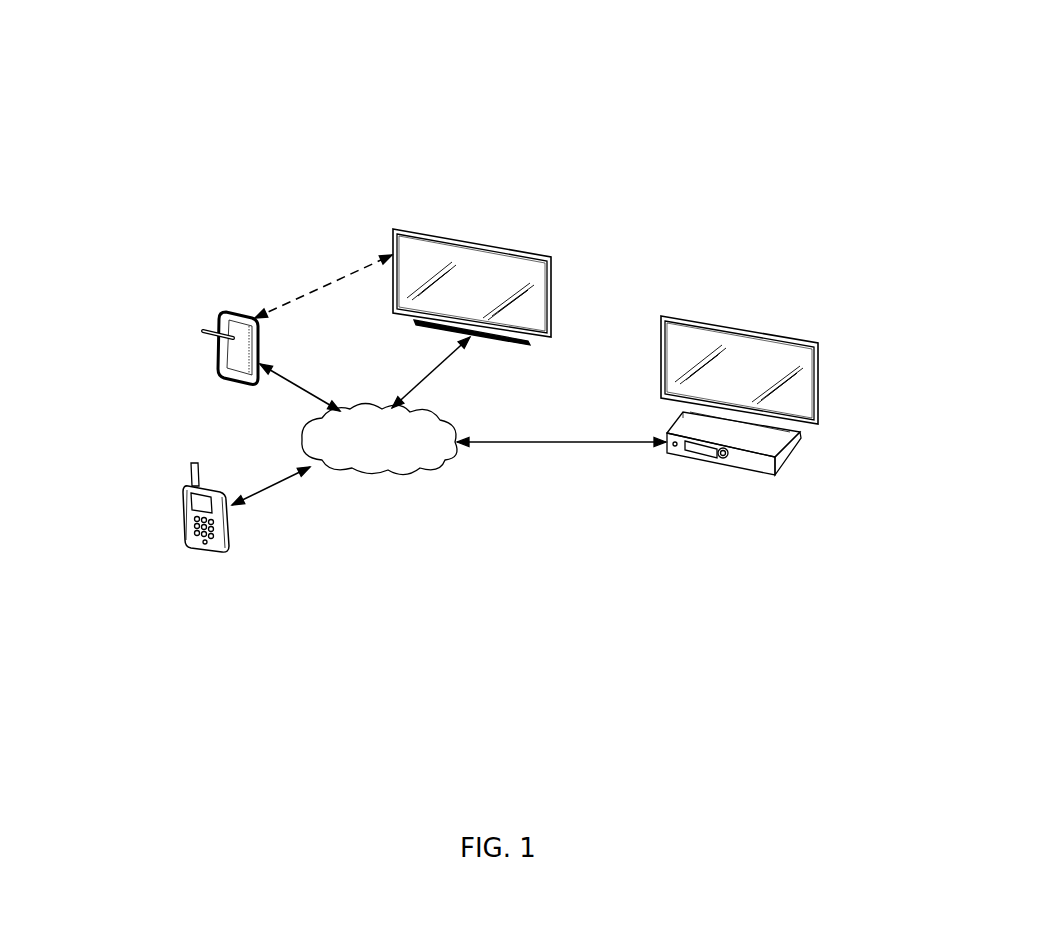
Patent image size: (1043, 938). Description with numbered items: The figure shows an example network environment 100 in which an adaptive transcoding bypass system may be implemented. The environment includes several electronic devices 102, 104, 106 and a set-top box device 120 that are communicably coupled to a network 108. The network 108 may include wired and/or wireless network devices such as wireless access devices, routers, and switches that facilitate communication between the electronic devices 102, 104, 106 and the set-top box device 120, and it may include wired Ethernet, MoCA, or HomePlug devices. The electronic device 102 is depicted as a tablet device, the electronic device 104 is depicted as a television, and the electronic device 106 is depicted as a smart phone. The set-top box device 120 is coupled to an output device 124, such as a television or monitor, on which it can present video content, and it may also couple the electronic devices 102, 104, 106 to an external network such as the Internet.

The network environment 100 is at (950, 64).
The electronic device 102 is at (218, 315).
The electronic device 104 is at (462, 242).
The electronic device 106 is at (180, 500).
The network 108 is at (405, 472).
The set-top box device 120 is at (788, 447).
The output device 124 is at (762, 332).